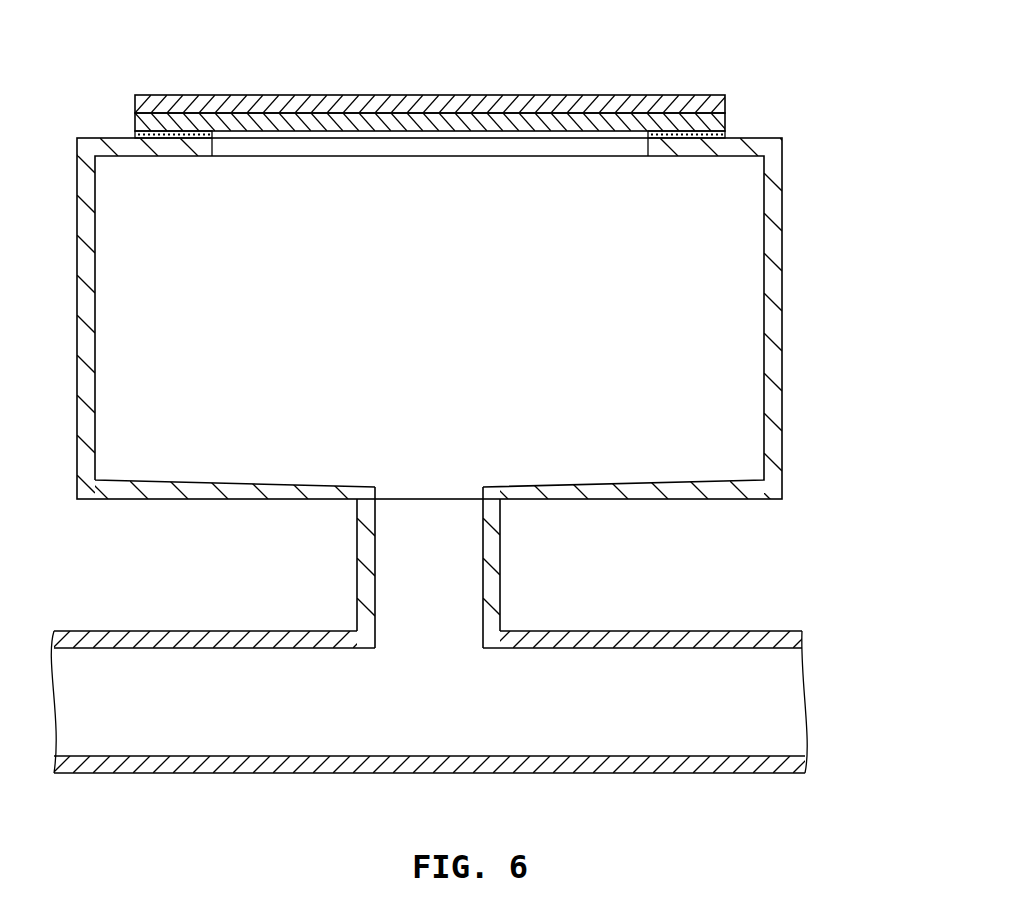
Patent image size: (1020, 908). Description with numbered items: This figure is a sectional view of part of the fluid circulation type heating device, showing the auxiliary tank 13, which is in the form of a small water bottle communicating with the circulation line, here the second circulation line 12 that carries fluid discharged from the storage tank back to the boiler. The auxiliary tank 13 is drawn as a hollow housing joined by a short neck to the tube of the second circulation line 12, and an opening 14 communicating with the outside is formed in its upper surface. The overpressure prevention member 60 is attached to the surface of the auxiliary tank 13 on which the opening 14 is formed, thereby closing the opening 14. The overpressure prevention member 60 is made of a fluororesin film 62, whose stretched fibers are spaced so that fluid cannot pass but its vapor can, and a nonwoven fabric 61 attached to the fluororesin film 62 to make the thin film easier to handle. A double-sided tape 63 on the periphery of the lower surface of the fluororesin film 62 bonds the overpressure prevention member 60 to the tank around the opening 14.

The second circulation line 12 is at (717, 638).
The auxiliary tank 13 is at (772, 328).
The opening 14 is at (467, 210).
The overpressure prevention member 60 is at (502, 82).
The nonwoven fabric 61 is at (715, 105).
The fluororesin film 62 is at (715, 120).
The double-sided tape 63 is at (717, 135).